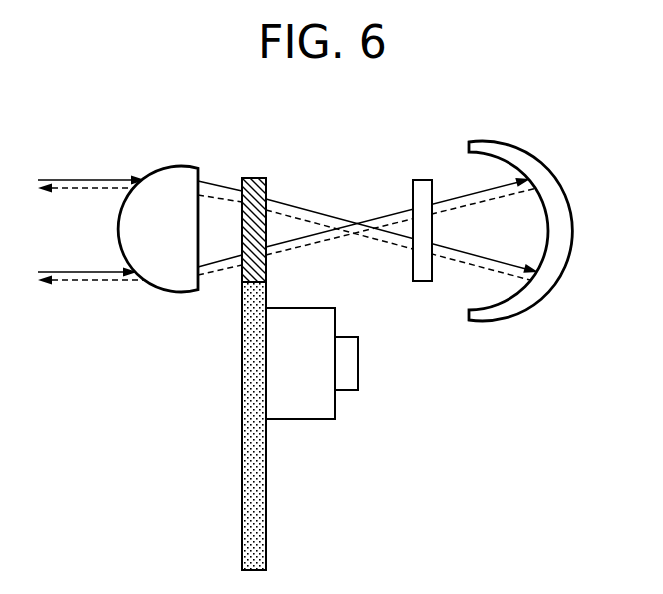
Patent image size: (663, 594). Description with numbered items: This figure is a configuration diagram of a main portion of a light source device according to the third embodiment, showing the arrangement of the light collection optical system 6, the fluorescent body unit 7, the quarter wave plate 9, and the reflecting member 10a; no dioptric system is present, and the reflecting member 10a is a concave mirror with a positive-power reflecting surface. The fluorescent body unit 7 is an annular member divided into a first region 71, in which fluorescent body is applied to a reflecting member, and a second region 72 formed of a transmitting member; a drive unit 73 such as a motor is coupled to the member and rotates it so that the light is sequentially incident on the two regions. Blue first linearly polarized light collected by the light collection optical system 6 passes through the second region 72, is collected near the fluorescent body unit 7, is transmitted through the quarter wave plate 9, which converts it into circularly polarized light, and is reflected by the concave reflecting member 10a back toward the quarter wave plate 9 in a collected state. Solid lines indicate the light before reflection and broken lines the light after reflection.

The light collection optical system 6 is at (175, 167).
The fluorescent body unit 7 is at (267, 460).
The quarter wave plate 9 is at (423, 180).
The reflecting member 10a is at (545, 170).
The first region 71 is at (267, 530).
The second region 72 is at (255, 177).
The drive unit 73 is at (337, 405).